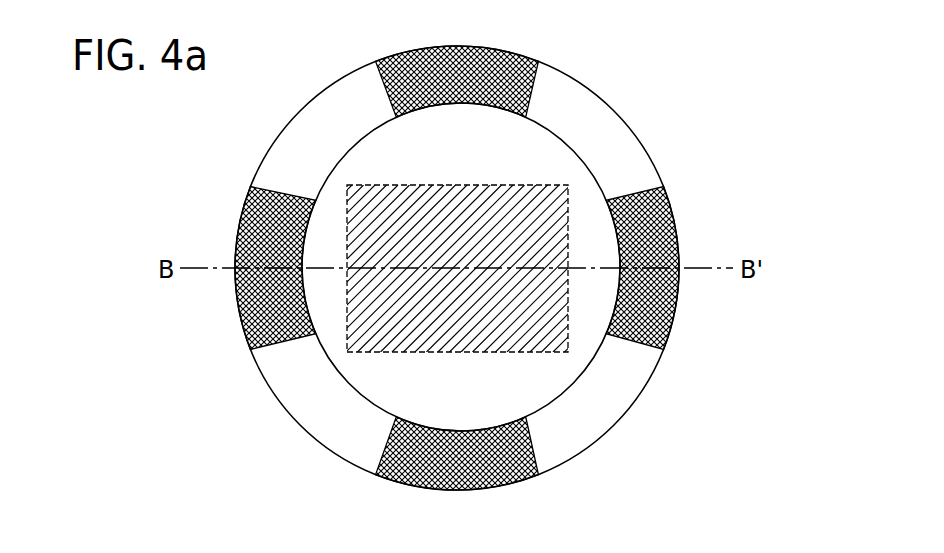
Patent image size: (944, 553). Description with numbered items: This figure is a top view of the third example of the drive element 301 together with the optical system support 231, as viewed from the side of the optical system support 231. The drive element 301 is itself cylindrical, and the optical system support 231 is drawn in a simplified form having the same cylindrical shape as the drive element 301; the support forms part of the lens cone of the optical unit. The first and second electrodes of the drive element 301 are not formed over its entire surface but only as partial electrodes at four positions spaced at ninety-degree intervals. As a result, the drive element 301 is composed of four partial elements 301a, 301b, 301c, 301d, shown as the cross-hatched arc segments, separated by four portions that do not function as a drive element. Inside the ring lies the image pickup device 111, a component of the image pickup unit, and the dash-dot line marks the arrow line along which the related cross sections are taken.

The drive element 301 is at (794, 144).
The optical system support 231 is at (623, 118).
The partial element 301a is at (673, 212).
The partial element 301b is at (245, 213).
The partial element 301c is at (502, 49).
The partial element 301d is at (514, 479).
The image pickup device 111 is at (457, 184).